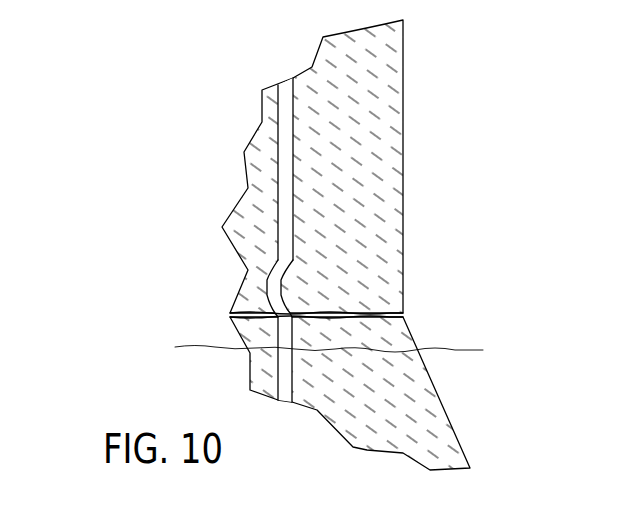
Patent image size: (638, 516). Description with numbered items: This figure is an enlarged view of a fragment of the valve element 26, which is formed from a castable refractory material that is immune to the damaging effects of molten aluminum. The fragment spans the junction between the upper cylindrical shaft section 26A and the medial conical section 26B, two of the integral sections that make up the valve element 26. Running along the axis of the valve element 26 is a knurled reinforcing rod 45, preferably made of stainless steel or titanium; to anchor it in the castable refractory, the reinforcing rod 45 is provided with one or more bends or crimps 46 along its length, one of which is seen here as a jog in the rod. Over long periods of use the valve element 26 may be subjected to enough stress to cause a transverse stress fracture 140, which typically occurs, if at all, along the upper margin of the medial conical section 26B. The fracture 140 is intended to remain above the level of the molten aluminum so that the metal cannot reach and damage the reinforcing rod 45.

The valve element 26 is at (205, 108).
The upper cylindrical shaft section 26A is at (388, 145).
The medial conical section 26B is at (440, 435).
The reinforcing rod 45 is at (283, 183).
The bends or crimps 46 is at (262, 282).
The transverse stress fracture 140 is at (380, 312).